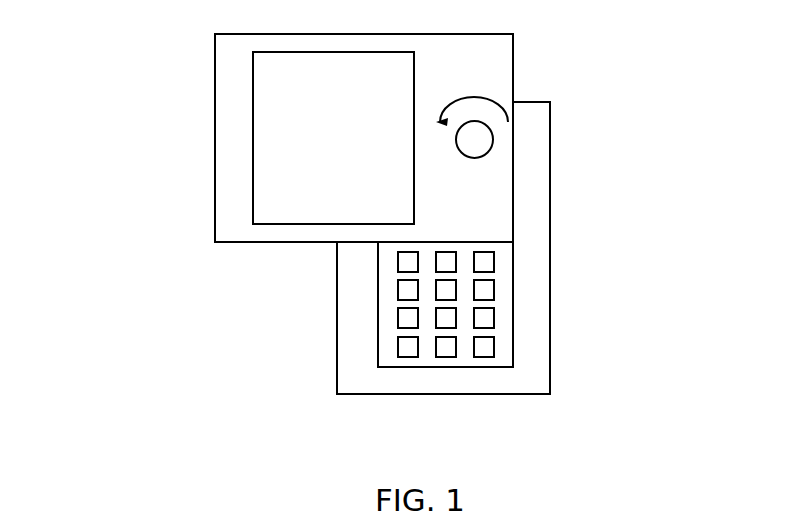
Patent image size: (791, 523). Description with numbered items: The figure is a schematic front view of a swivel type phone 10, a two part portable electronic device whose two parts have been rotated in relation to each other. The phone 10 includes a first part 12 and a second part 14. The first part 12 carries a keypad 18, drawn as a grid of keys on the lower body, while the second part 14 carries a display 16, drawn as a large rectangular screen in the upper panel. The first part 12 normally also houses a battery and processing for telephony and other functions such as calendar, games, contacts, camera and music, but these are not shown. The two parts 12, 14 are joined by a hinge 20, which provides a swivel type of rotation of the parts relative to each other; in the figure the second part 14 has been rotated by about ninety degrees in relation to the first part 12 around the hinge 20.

The phone 10 is at (228, 301).
The first part 12 is at (513, 198).
The second part 14 is at (215, 95).
The display 16 is at (302, 210).
The keypad 18 is at (513, 280).
The hinge 20 is at (471, 122).